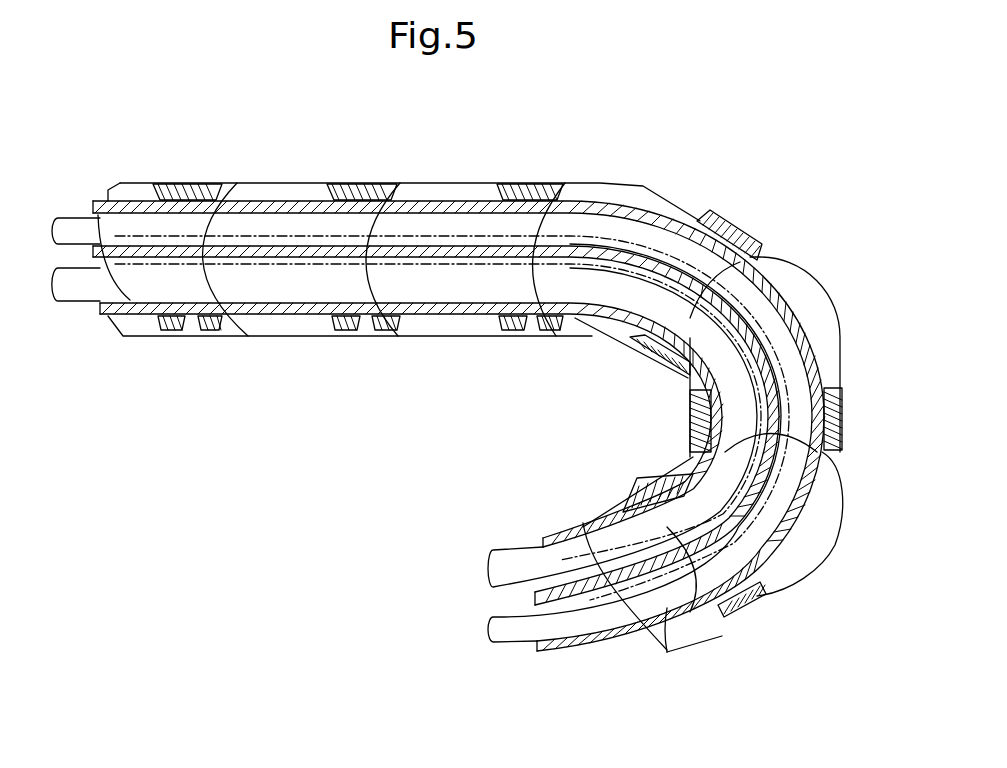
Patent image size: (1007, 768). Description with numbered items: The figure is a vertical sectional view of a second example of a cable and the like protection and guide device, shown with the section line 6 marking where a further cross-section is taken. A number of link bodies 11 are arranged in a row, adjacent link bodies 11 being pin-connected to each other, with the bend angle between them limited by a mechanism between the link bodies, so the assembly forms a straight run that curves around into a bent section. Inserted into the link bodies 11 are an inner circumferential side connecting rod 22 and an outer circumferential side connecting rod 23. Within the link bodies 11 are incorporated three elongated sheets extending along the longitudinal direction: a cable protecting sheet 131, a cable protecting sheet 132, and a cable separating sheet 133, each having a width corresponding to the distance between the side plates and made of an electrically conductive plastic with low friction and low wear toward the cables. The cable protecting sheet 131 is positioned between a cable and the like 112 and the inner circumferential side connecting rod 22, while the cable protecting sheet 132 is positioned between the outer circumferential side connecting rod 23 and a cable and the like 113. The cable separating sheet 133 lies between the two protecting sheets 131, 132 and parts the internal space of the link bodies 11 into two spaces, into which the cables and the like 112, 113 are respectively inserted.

The link body 11 is at (263, 186).
The section line of FIG. 6 is at (282, 173).
The inner circumferential side connecting rod 22 is at (533, 320).
The outer circumferential side connecting rod 23 is at (365, 196).
The cable protecting sheet 131 is at (463, 318).
The cable protecting sheet 132 is at (443, 200).
The cable separating sheet 133 is at (478, 247).
The cable and the like 112 is at (72, 298).
The cable and the like 113 is at (71, 215).